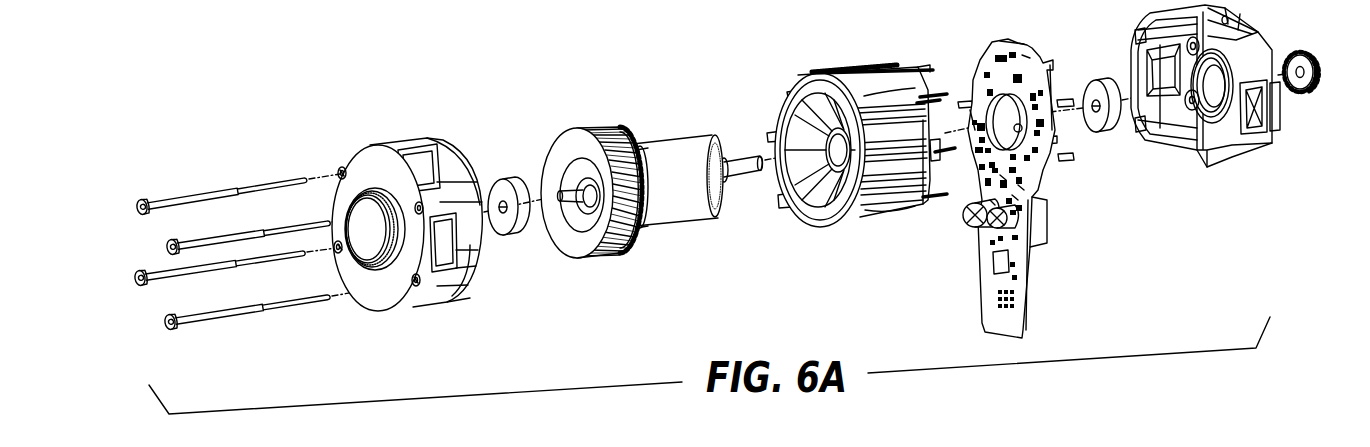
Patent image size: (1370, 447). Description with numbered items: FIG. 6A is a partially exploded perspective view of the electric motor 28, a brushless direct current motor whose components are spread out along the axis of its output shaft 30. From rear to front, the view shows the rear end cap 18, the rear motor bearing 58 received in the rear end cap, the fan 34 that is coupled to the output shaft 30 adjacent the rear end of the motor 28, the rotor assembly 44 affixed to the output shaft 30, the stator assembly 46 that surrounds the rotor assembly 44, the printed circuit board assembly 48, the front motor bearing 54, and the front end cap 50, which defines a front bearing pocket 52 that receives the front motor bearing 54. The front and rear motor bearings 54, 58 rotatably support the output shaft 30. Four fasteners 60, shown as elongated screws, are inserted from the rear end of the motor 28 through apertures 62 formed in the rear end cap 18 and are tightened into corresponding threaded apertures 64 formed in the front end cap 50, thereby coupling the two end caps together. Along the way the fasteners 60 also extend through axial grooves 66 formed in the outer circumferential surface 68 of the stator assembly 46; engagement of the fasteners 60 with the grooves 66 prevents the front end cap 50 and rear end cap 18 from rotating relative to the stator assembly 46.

The electric motor 28 is at (412, 82).
The rear end cap 18 is at (408, 143).
The fasteners 60 is at (202, 197).
The apertures 62 is at (323, 160).
The rear motor bearing 58 is at (517, 175).
The fan 34 is at (587, 125).
The rotor assembly 44 is at (633, 128).
The output shaft 30 is at (733, 167).
The stator assembly 46 is at (800, 73).
The outer circumferential surface 68 is at (868, 95).
The axial grooves 66 is at (876, 210).
The printed circuit board assembly 48 is at (1055, 253).
The front motor bearing 54 is at (1115, 127).
The front end cap 50 is at (1255, 147).
The front bearing pocket 52 is at (1207, 103).
The threaded apertures 64 is at (1137, 40).